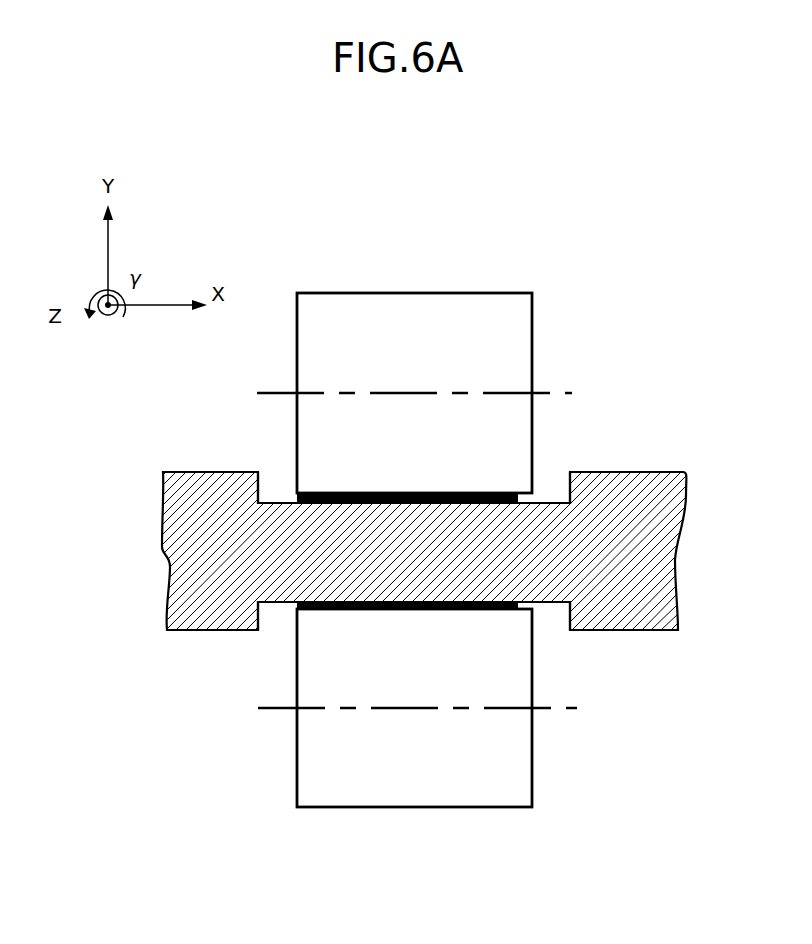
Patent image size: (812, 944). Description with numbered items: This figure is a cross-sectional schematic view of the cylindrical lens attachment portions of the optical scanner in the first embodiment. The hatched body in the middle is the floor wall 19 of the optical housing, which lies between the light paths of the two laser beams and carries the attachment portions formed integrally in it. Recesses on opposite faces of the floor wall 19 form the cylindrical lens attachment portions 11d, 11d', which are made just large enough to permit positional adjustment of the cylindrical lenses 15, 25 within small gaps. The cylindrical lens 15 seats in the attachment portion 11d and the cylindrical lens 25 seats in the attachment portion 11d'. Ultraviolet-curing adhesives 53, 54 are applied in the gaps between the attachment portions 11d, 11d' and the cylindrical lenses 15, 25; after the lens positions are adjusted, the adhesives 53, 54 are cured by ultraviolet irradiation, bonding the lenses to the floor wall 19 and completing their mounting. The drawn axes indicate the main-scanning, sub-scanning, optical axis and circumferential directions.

The cylindrical lens 15 is at (360, 281).
The cylindrical lens 25 is at (366, 820).
The floor wall 19 is at (218, 539).
The cylindrical lens attachment portion 11d is at (462, 377).
The cylindrical lens attachment portion 11d' is at (469, 720).
The ultraviolet-curing adhesive 53 is at (493, 505).
The ultraviolet-curing adhesive 54 is at (498, 600).